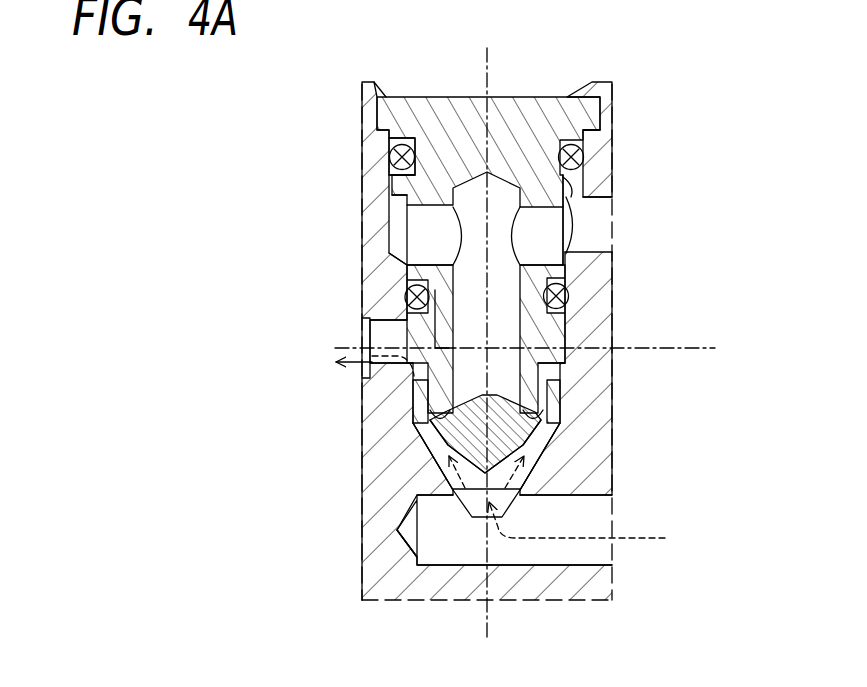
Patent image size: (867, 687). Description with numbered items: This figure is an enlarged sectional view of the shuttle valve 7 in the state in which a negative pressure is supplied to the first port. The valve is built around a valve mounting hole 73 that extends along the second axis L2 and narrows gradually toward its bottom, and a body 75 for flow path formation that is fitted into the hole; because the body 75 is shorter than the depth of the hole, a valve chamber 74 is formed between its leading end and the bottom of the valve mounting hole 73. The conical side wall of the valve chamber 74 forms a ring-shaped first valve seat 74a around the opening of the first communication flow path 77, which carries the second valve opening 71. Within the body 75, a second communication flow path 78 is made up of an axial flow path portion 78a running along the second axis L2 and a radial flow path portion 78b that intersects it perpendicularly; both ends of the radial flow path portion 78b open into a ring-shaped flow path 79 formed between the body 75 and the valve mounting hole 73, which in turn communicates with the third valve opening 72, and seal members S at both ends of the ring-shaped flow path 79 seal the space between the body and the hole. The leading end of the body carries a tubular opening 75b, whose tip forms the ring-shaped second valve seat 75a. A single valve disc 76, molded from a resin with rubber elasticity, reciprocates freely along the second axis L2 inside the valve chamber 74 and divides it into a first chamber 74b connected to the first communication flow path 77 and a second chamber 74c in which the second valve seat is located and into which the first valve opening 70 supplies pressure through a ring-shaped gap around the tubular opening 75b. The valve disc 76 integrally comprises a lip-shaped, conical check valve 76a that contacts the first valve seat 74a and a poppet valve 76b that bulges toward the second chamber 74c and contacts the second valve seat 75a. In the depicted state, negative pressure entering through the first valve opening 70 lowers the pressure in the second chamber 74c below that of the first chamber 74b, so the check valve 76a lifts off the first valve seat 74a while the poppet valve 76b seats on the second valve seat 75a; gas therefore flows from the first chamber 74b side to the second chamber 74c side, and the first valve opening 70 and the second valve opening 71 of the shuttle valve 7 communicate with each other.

The shuttle valve 7 is at (547, 88).
The first valve opening 70 is at (378, 332).
The second valve opening 71 is at (590, 555).
The third valve opening 72 is at (595, 228).
The valve mounting hole 73 is at (575, 207).
The valve chamber 74 is at (447, 462).
The first valve seat 74a is at (545, 462).
The first chamber 74b is at (503, 497).
The second chamber 74c is at (376, 322).
The body for flow path formation 75 is at (433, 123).
The second valve seat 75a is at (432, 414).
The tubular opening 75b is at (548, 378).
The valve disc 76 is at (525, 432).
The check valve 76a is at (415, 403).
The poppet valve 76b is at (447, 455).
The first communication flow path 77 is at (432, 548).
The second communication flow path 78 is at (252, 105).
The axial flow path portion 78a is at (412, 168).
The radial flow path portion 78b is at (388, 197).
The ring-shaped flow path 79 is at (433, 223).
The seal member S is at (572, 158).
The second axis L2 is at (487, 324).